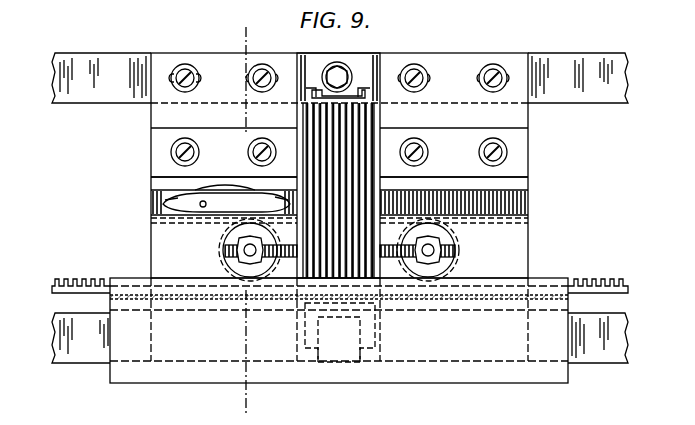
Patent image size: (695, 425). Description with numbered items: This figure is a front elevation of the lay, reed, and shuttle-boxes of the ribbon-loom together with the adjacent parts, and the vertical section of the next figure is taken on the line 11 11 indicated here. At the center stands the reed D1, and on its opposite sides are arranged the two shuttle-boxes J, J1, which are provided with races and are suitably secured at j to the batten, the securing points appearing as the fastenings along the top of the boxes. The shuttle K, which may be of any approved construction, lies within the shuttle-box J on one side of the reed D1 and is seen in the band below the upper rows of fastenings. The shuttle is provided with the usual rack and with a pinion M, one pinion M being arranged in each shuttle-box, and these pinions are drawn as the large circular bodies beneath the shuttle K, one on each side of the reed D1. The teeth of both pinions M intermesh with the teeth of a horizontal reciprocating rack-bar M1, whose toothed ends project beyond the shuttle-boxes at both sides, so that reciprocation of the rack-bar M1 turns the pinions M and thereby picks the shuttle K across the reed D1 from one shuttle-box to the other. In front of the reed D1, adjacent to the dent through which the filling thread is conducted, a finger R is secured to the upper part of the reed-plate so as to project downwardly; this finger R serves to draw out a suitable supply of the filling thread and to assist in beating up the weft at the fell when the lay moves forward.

The securing point of shuttle-boxes j is at (496, 74).
The reed D1 is at (338, 158).
The finger R is at (376, 158).
The shuttle-box J is at (156, 184).
The shuttle-box J1 is at (528, 183).
The shuttle K is at (175, 206).
The pinion M is at (228, 236).
The rack-bar M1 is at (55, 284).
The section line 11 11 is at (240, 45).